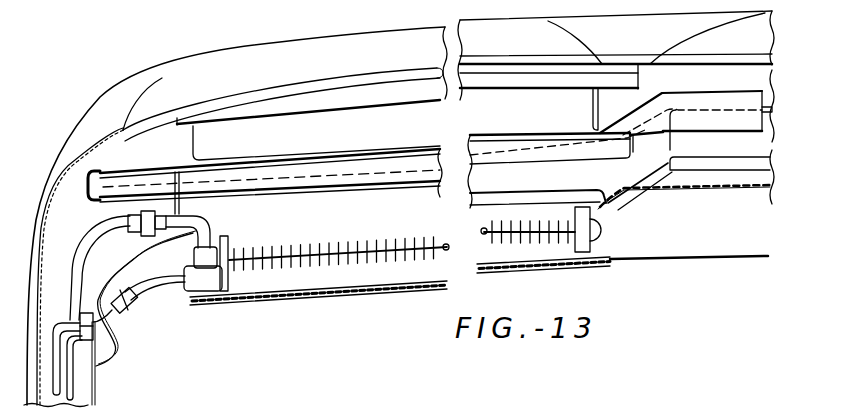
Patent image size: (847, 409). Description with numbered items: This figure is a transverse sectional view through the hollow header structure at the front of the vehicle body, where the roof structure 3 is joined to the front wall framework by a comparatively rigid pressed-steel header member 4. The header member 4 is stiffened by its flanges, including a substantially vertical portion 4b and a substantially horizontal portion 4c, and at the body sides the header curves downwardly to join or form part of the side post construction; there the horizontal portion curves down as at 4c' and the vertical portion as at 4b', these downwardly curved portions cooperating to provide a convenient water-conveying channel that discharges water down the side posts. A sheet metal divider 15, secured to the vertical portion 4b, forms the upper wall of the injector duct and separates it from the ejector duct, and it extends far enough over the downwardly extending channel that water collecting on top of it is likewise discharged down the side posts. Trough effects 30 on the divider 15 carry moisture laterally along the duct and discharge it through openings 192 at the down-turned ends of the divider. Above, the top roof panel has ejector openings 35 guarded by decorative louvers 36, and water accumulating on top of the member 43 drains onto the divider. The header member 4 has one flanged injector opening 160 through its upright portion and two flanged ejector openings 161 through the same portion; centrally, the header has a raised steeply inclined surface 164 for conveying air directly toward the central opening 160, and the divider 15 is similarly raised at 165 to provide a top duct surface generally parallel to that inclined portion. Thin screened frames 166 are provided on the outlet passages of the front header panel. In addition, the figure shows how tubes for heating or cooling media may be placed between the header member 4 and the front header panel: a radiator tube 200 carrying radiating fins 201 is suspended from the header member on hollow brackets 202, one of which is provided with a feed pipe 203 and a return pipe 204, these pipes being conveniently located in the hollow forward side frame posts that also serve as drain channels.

The roof structure 3 is at (614, 27).
The header member 4 is at (681, 141).
The vertical portion of header member 4b is at (579, 109).
The horizontal portion of header member 4c is at (561, 206).
The downwardly curved portions of vertical header portion 4b' is at (80, 266).
The downwardly curving portion of horizontal header portion 4c' is at (144, 298).
The divider 15 is at (140, 172).
The trough effects 30 is at (338, 169).
The ejector openings 35 is at (258, 96).
The decorative louvers 36 is at (447, 79).
The member 43 is at (421, 108).
The flanged injector opening 160 is at (200, 141).
The flanged ejector openings 161 is at (775, 156).
The raised steeply inclined surface 164 is at (717, 183).
The raised central portion of divider 165 is at (702, 106).
The screened frames 166 is at (262, 300).
The openings 192 is at (92, 196).
The radiator tube 200 is at (482, 240).
The radiating fins 201 is at (347, 268).
The hollow brackets 202 is at (193, 295).
The feed pipe 203 is at (196, 217).
The return pipe 204 is at (157, 292).